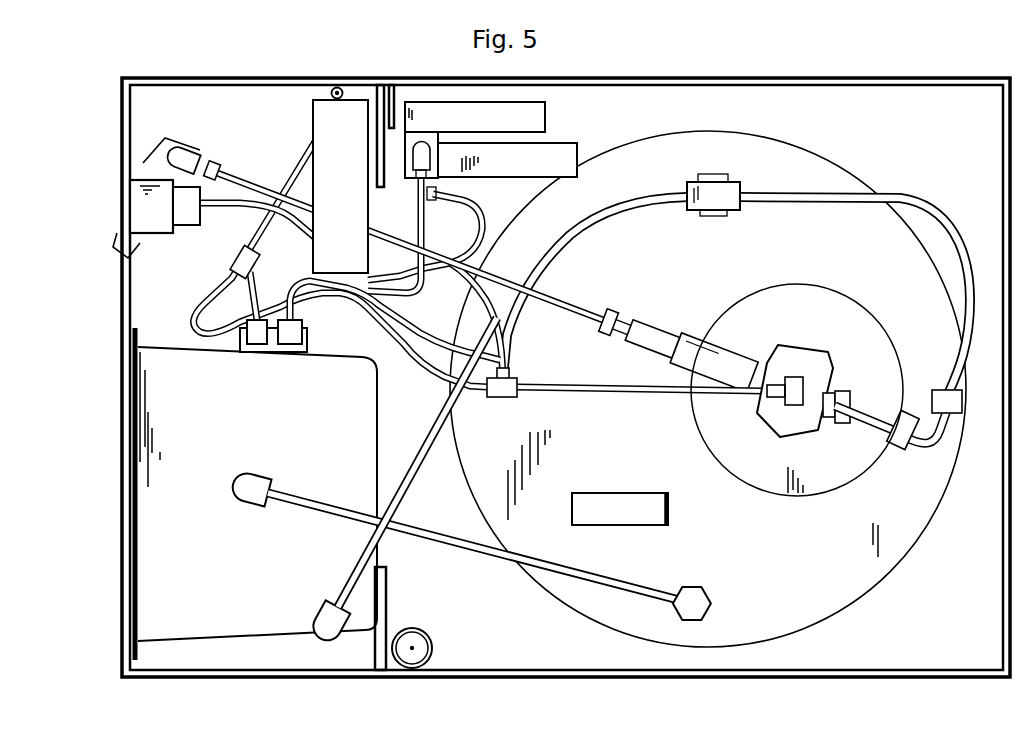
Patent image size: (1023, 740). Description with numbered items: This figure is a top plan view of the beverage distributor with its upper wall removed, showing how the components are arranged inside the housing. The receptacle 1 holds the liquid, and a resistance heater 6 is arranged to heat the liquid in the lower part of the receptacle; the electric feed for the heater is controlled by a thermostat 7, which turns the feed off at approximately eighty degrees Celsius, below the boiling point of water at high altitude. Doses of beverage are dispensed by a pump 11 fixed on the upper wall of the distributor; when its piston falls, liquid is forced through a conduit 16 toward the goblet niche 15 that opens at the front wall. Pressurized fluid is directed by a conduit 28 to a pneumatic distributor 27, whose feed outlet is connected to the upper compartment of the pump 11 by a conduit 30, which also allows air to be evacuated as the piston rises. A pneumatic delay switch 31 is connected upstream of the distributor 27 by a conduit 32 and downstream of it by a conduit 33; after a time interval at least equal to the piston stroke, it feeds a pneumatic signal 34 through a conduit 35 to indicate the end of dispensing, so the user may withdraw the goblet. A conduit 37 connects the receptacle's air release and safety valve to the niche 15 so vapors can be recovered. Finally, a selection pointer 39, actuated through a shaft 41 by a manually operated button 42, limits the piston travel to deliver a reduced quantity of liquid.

The receptacle 1 is at (850, 583).
The resistance heater 6 is at (660, 518).
The thermostat 7 is at (358, 118).
The pump 11 is at (820, 367).
The goblet niche 15 is at (147, 432).
The conduit 16 is at (470, 557).
The pneumatic distributor 27 is at (295, 350).
The conduit 28 is at (298, 176).
The conduit 30 is at (606, 395).
The pneumatic delay switch 31 is at (543, 153).
The conduit 32 is at (478, 227).
The conduit 33 is at (470, 277).
The pneumatic signal 34 is at (140, 203).
The conduit 35 is at (232, 207).
The conduit 37 is at (587, 210).
The pointer 39 is at (748, 365).
The shaft 41 is at (583, 310).
The operating button 42 is at (142, 165).